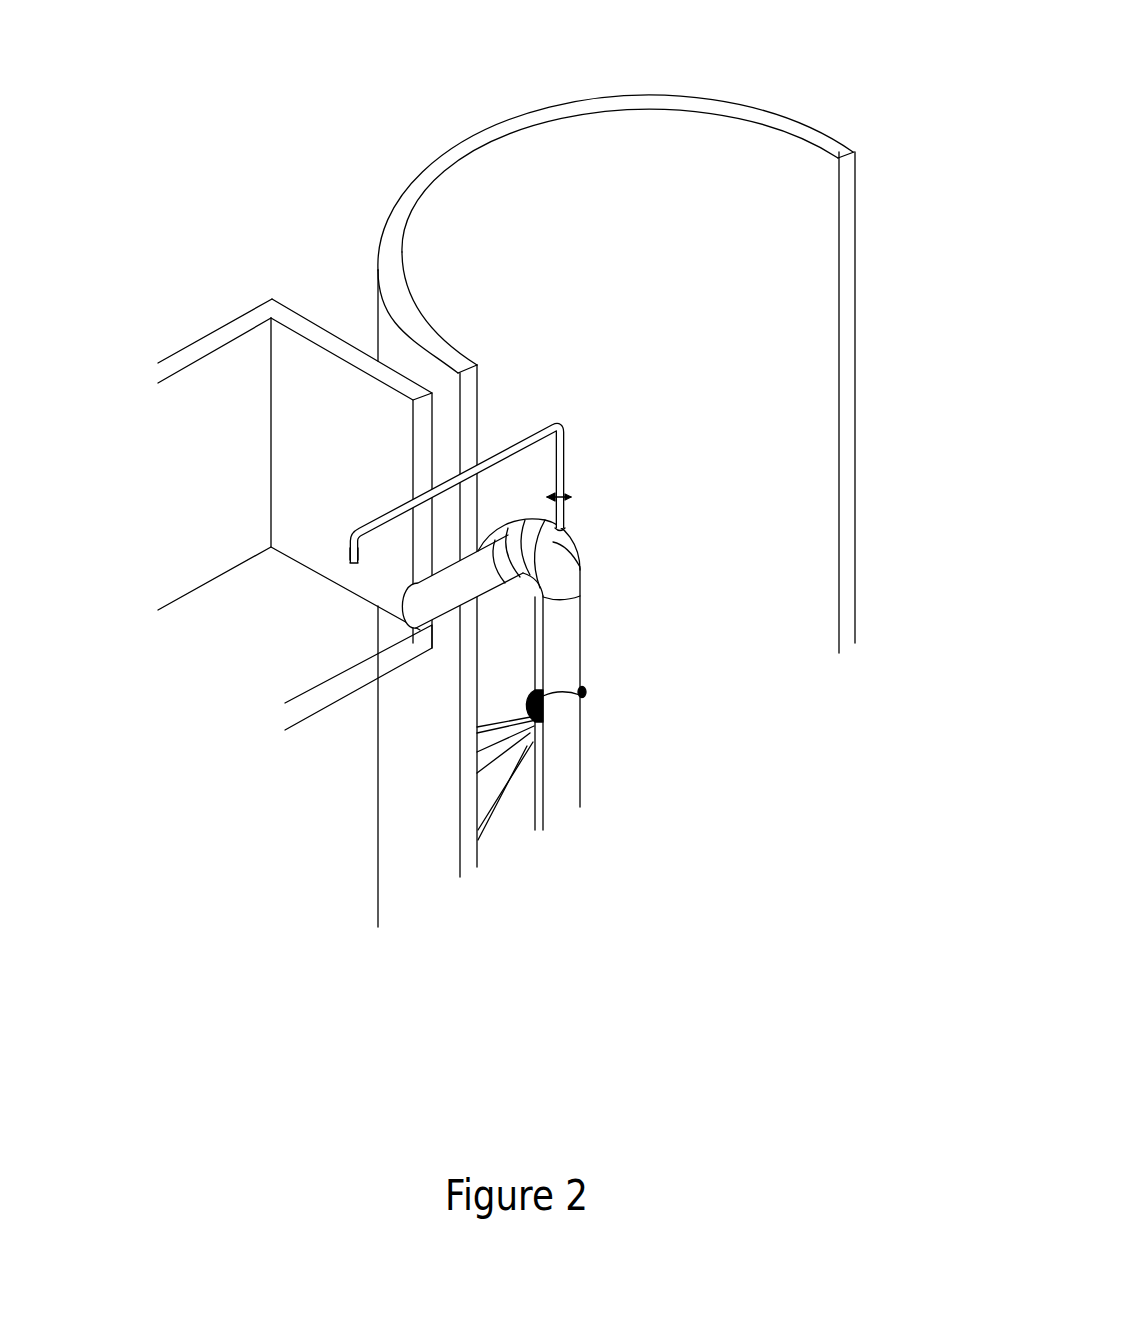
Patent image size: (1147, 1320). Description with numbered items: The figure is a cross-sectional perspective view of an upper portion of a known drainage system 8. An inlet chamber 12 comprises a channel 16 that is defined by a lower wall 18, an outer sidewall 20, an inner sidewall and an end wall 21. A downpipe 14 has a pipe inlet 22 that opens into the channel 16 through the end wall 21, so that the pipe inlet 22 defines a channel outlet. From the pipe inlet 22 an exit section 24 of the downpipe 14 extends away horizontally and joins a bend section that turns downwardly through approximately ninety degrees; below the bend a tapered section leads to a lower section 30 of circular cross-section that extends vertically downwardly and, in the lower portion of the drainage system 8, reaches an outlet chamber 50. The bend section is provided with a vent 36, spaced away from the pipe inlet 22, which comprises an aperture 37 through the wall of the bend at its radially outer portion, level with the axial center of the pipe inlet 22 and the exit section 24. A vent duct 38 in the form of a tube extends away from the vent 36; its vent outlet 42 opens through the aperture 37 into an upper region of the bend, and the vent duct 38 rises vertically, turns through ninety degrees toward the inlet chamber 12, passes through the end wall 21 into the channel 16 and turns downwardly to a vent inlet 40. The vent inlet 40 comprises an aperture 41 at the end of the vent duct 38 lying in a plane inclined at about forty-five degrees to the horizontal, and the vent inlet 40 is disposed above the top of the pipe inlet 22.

The drainage system 8 is at (797, 96).
The inlet chamber 12 is at (249, 439).
The downpipe 14 is at (603, 653).
The channel 16 is at (225, 442).
The lower wall 18 is at (257, 692).
The outer sidewall 20 is at (185, 348).
The end wall 21 is at (307, 319).
The pipe inlet 22 is at (410, 603).
The exit section 24 is at (445, 598).
The lower section 30 is at (582, 770).
The vent 36 is at (591, 531).
The aperture 37 is at (555, 528).
The vent duct 38 is at (397, 508).
The vent inlet 40 is at (353, 577).
The aperture 41 is at (348, 565).
The vent outlet 42 is at (570, 527).
The outlet chamber 50 is at (872, 428).